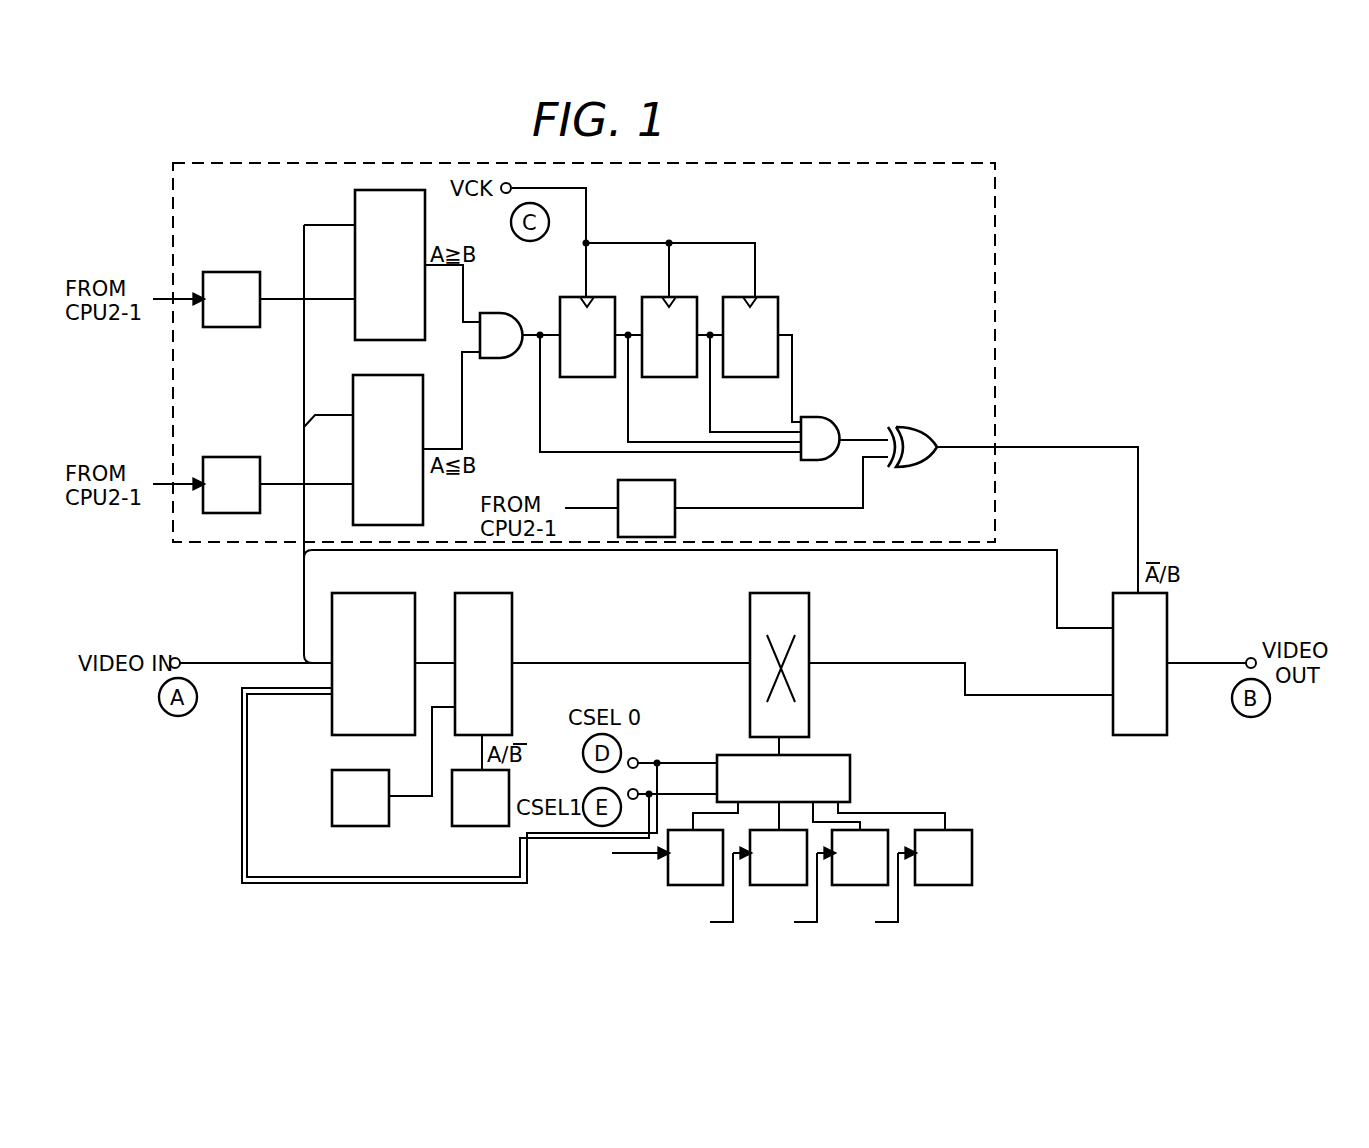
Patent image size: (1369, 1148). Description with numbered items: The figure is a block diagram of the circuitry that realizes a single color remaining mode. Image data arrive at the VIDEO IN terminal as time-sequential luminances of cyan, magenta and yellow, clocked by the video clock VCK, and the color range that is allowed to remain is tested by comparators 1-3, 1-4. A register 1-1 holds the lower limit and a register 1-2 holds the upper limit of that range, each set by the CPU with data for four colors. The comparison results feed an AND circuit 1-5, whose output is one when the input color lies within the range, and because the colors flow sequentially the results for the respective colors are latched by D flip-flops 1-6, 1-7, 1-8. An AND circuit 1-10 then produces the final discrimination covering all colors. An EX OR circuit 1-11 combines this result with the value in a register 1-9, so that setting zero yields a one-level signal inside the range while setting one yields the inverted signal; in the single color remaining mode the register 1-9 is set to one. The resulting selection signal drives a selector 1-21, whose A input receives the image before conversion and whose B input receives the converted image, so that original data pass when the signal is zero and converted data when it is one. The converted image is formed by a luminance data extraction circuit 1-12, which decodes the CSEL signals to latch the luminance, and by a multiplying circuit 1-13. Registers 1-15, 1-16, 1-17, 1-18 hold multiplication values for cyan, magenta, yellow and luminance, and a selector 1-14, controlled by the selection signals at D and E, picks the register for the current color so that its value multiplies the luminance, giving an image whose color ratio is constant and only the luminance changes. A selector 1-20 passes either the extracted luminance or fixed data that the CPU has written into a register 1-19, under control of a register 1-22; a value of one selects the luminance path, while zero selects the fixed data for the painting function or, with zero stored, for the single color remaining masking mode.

The register 1-1 is at (243, 272).
The register 1-2 is at (243, 457).
The comparator 1-3 is at (355, 200).
The comparator 1-4 is at (353, 388).
The AND circuit 1-5 is at (506, 313).
The D flip-flop 1-6 is at (588, 377).
The D flip-flop 1-7 is at (672, 377).
The D flip-flop 1-8 is at (752, 377).
The register 1-9 is at (675, 497).
The AND circuit 1-10 is at (822, 417).
The EX OR circuit 1-11 is at (916, 427).
The luminance data extraction circuit 1-12 is at (392, 593).
The multiplying circuit 1-13 is at (790, 593).
The selector 1-14 is at (850, 778).
The register 1-15 is at (700, 885).
The register 1-16 is at (783, 885).
The register 1-17 is at (864, 885).
The register 1-18 is at (948, 885).
The register 1-19 is at (365, 826).
The selector 1-20 is at (494, 593).
The selector 1-21 is at (1126, 593).
The register 1-22 is at (483, 826).